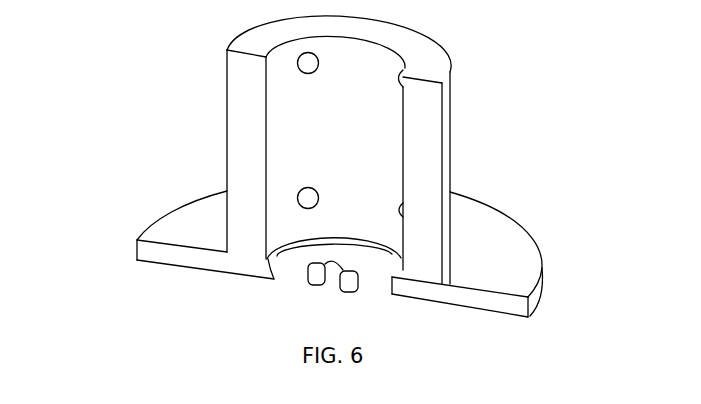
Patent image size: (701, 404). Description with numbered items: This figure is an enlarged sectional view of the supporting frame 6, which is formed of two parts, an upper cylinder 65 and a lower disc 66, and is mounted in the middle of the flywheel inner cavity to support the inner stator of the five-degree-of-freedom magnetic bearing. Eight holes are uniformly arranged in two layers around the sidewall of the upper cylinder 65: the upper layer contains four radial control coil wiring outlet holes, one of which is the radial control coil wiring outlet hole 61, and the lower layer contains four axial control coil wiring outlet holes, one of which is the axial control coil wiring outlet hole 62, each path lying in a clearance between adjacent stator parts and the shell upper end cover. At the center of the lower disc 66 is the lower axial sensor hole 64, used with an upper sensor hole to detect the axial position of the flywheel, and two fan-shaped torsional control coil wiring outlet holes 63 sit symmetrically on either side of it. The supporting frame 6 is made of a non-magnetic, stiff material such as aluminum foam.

The supporting frame 6 is at (412, 168).
The radial control coil wiring outlet hole 61 is at (293, 63).
The axial control coil wiring outlet hole 62 is at (293, 198).
The torsional control coil wiring outlet hole 63 is at (278, 261).
The lower axial sensor hole 64 is at (340, 273).
The upper cylinder 65 is at (412, 112).
The lower disc 66 is at (487, 231).